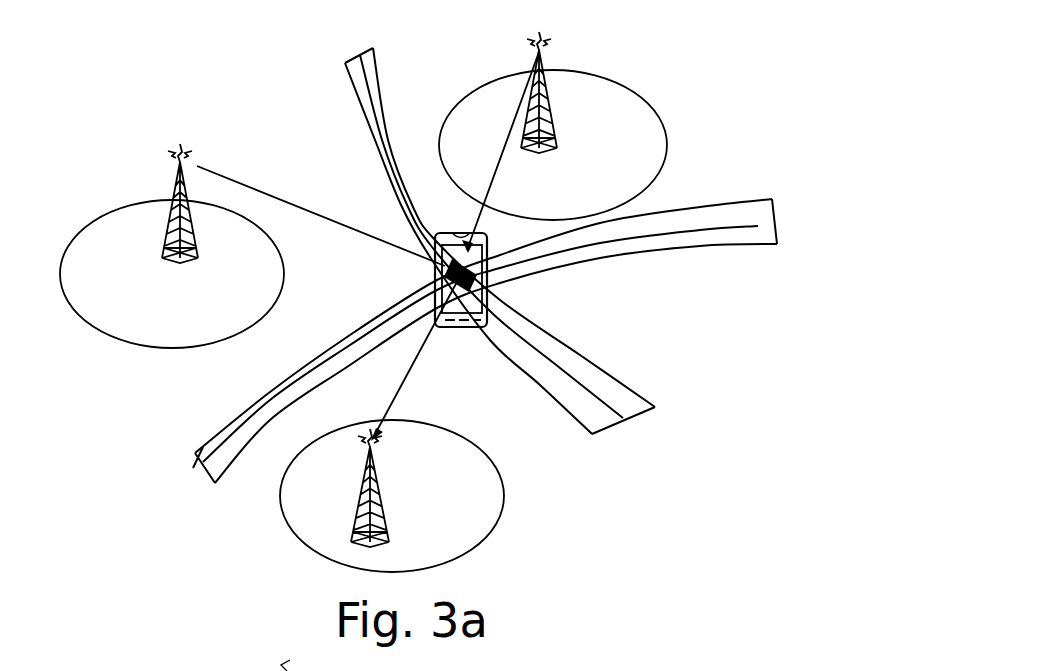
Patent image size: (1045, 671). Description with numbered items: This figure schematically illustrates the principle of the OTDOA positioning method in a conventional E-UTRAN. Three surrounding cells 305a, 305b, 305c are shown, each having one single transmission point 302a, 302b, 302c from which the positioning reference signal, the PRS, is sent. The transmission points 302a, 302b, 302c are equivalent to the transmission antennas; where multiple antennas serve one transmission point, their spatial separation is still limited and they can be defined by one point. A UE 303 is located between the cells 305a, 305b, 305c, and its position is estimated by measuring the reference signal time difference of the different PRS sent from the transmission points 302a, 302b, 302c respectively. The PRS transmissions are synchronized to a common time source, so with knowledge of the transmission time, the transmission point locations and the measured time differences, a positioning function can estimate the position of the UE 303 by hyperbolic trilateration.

The transmission point 302a is at (168, 164).
The transmission point 302b is at (550, 42).
The transmission point 302c is at (383, 453).
The UE 303 is at (463, 333).
The cell 305a is at (137, 345).
The cell 305b is at (648, 125).
The cell 305c is at (291, 530).